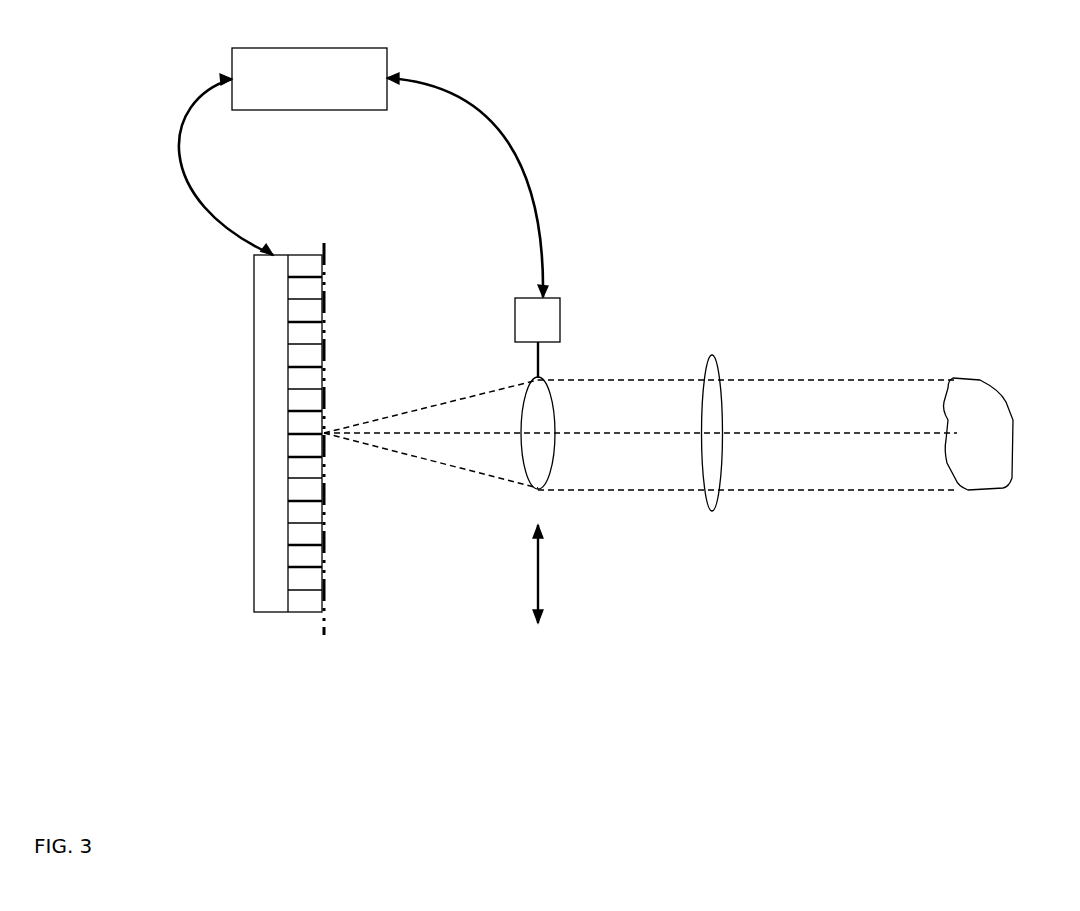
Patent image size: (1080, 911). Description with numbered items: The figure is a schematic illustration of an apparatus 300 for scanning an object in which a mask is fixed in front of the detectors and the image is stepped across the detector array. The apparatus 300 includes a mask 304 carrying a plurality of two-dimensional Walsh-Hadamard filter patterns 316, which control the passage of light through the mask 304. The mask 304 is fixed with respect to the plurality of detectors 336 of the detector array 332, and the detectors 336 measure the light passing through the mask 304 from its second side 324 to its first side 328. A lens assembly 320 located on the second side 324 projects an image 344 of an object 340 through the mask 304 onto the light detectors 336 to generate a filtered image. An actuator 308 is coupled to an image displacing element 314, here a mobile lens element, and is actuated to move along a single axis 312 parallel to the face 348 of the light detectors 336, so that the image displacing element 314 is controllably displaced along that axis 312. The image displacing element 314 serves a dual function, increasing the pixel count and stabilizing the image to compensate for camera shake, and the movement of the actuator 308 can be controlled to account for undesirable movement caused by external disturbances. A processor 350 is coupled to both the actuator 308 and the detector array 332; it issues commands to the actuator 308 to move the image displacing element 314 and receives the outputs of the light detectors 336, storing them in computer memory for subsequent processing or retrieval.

The apparatus 300 is at (143, 670).
The mask 304 is at (333, 387).
The actuator 308 is at (562, 316).
The axis 312 is at (538, 568).
The image displacing element 314 is at (523, 477).
The filter patterns 316 is at (333, 310).
The lens assembly 320 is at (712, 509).
The second side 324 is at (429, 543).
The first side 328 is at (196, 543).
The detector array 332 is at (287, 255).
The detectors 336 is at (298, 289).
The object 340 is at (1005, 400).
The image 344 is at (812, 377).
The face 348 is at (325, 264).
The processor 350 is at (310, 48).